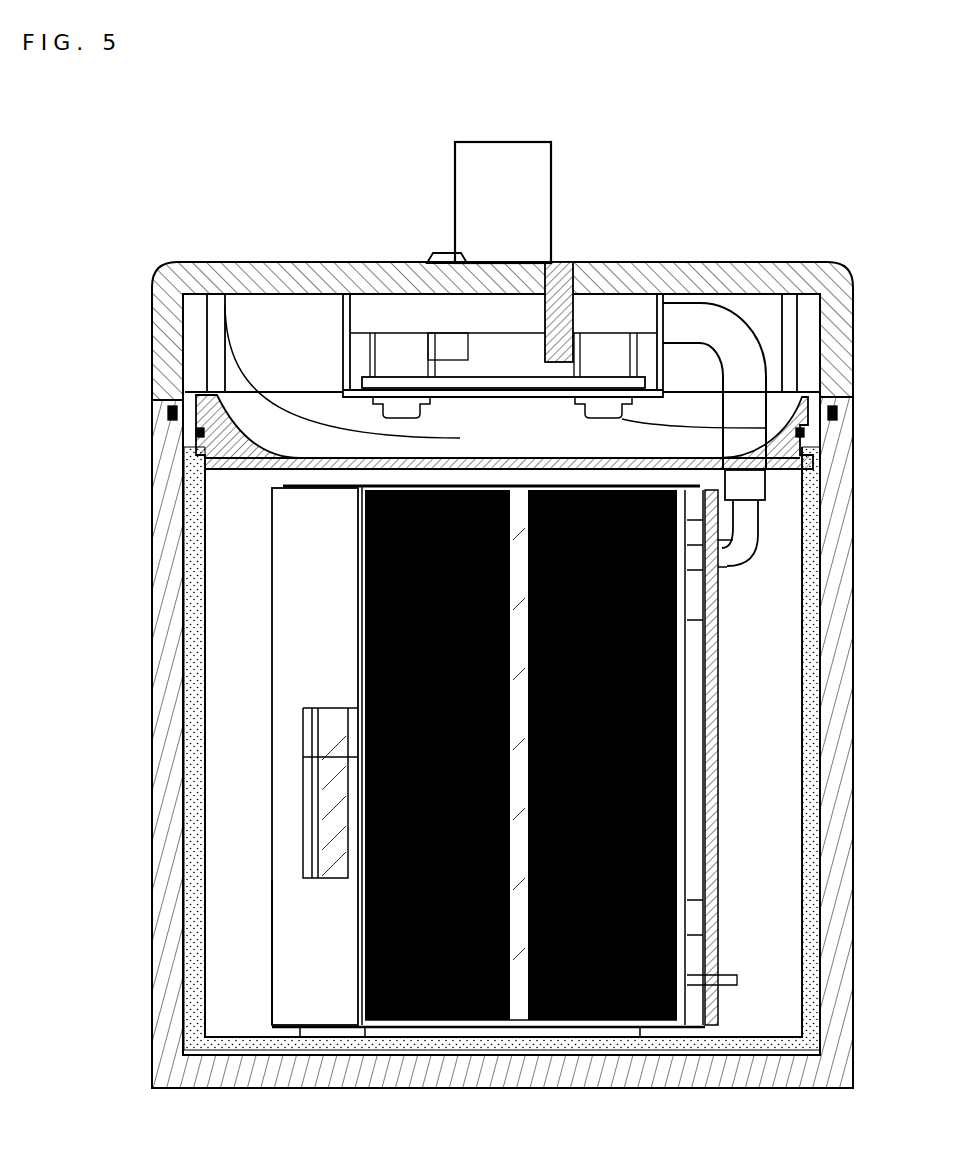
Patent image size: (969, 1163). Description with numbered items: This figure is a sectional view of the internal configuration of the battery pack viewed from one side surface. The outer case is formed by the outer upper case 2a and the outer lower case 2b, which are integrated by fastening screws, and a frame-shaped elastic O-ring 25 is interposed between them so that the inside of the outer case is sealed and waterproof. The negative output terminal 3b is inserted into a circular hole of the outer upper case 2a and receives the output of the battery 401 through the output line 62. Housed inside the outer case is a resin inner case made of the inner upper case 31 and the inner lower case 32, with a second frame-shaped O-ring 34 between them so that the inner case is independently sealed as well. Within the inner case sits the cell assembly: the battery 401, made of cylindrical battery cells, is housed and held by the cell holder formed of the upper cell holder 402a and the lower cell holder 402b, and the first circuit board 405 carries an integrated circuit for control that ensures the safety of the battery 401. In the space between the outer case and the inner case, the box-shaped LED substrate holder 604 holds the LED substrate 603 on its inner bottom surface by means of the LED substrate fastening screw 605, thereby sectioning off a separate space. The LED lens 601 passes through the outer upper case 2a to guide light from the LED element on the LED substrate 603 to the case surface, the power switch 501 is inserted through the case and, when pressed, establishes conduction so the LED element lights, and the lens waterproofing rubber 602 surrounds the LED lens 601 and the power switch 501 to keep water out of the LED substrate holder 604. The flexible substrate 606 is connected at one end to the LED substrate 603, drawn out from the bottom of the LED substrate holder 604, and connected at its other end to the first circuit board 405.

The negative output terminal 3b is at (527, 142).
The outer upper case 2a is at (853, 290).
The outer lower case 2b is at (853, 698).
The O-ring 25 is at (168, 412).
The inner upper case 31 is at (237, 473).
The inner lower case 32 is at (183, 565).
The O-ring 34 is at (203, 447).
The output line 62 is at (745, 333).
The battery 401 is at (360, 1015).
The upper cell holder 402a is at (270, 665).
The lower cell holder 402b is at (272, 947).
The first circuit board 405 is at (718, 632).
The power switch 501 is at (445, 253).
The LED lens 601 is at (567, 263).
The lens waterproofing rubber 602 is at (652, 296).
The LED substrate 603 is at (383, 373).
The LED substrate holder 604 is at (340, 322).
The LED substrate fastening screw 605 is at (793, 430).
The flexible substrate 606 is at (225, 294).